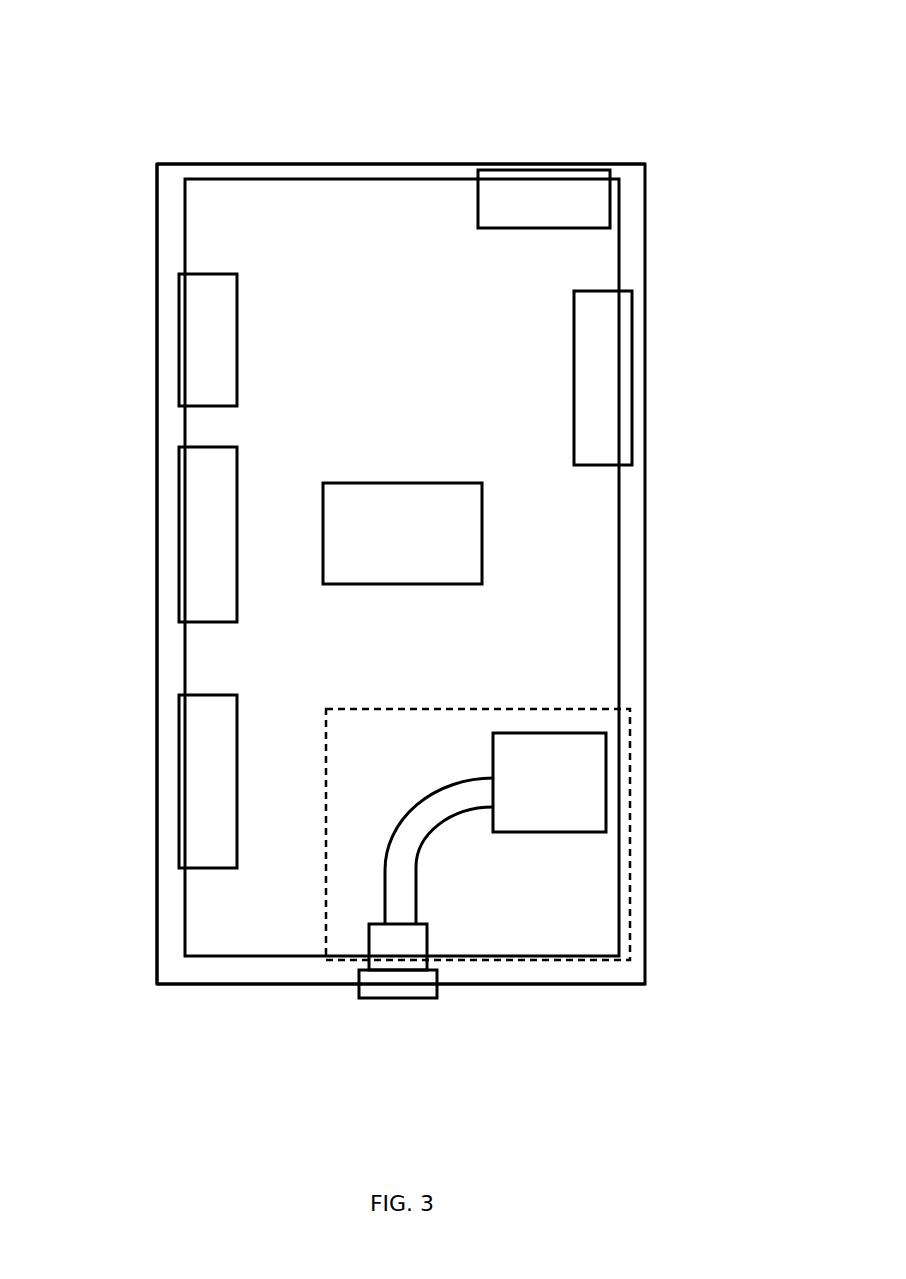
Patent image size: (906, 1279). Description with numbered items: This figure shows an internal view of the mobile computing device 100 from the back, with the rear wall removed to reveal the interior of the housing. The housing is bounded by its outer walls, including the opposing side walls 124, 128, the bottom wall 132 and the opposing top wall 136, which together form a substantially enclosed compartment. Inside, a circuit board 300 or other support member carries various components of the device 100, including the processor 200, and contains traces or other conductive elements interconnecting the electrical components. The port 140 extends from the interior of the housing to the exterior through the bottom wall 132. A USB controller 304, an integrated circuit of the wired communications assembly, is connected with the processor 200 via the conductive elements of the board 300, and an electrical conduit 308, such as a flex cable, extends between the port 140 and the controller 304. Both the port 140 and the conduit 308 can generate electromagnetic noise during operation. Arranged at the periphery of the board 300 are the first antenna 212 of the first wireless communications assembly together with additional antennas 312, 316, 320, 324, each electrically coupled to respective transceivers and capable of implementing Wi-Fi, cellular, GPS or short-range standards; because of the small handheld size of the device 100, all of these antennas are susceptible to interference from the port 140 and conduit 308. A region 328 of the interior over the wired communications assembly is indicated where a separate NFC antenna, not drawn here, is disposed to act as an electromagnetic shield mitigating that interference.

The mobile computing device 100 is at (147, 100).
The side wall 124 is at (645, 670).
The side wall 128 is at (157, 663).
The bottom wall 132 is at (245, 984).
The top wall 136 is at (353, 164).
The port 140 is at (385, 999).
The processor 200 is at (402, 533).
The first antenna 212 is at (179, 542).
The circuit board 300 is at (593, 585).
The USB controller 304 is at (549, 782).
The electrical conduit 308 is at (435, 818).
The antenna 312 is at (179, 779).
The antenna 316 is at (179, 328).
The antenna 320 is at (548, 170).
The antenna 324 is at (632, 374).
The region 328 is at (630, 870).